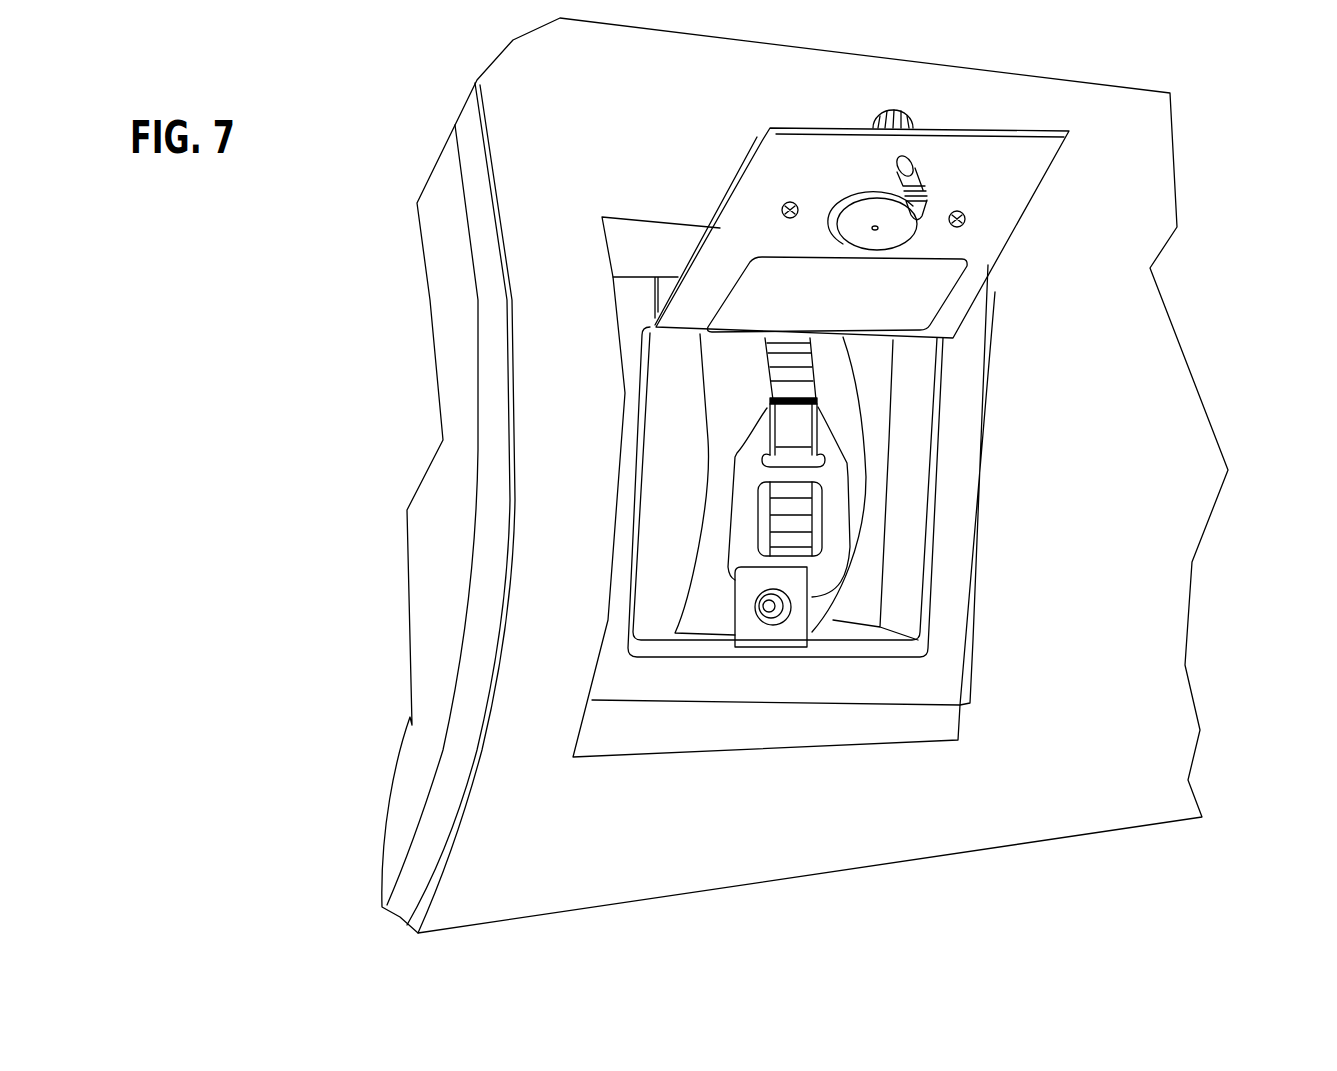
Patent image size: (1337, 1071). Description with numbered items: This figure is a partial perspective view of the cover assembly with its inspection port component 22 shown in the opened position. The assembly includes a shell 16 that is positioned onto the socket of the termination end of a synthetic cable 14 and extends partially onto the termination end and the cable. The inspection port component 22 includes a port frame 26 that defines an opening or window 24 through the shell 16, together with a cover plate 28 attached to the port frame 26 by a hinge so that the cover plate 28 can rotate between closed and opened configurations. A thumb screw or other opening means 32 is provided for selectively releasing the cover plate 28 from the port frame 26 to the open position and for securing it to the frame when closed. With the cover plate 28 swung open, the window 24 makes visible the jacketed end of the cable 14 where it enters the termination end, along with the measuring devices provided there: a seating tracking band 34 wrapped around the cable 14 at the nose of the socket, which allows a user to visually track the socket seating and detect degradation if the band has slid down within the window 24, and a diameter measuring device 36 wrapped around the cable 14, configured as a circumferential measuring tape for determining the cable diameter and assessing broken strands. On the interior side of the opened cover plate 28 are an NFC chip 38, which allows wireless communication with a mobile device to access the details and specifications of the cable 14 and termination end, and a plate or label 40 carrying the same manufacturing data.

The synthetic cable 14 is at (983, 640).
The shell 16 is at (1172, 150).
The inspection port component 22 is at (367, 205).
The opening or window 24 is at (943, 398).
The port frame 26 is at (612, 695).
The cover plate 28 is at (733, 193).
The thumb screw or opening means 32 is at (920, 197).
The seating tracking band 34 is at (663, 457).
The diameter measuring device 36 is at (790, 366).
The NFC chip 38 is at (867, 217).
The plate or label 40 is at (913, 275).